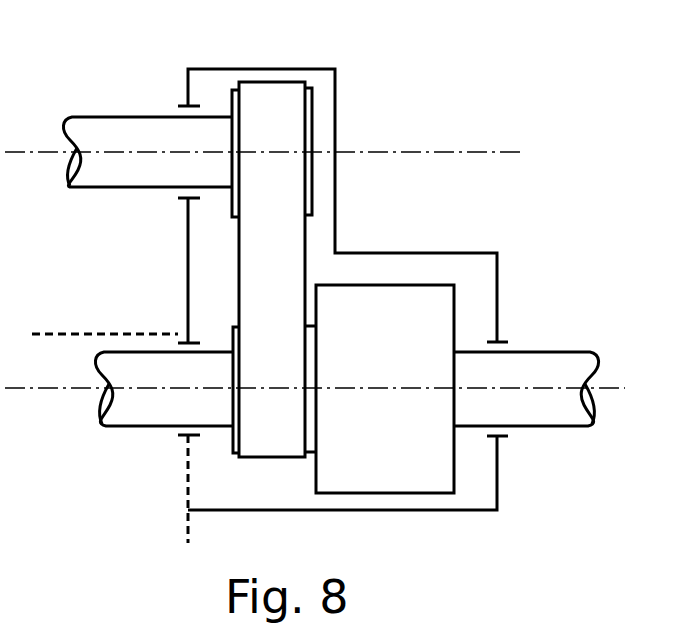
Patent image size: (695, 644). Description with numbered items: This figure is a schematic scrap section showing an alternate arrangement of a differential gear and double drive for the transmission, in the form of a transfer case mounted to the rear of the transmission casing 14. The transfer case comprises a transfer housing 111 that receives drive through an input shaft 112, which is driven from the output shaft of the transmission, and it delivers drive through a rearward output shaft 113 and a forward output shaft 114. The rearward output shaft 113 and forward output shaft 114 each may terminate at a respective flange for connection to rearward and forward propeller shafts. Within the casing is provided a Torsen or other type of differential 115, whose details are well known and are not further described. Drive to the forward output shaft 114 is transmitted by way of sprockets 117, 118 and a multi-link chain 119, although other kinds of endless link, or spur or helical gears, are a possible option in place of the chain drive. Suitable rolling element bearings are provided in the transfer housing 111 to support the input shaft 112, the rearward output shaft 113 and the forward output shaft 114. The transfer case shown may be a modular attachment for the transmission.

The transfer housing 111 is at (336, 114).
The input shaft 112 is at (170, 413).
The rearward output shaft 113 is at (538, 413).
The forward output shaft 114 is at (113, 130).
The differential 115 is at (403, 478).
The sprocket 117 is at (235, 330).
The sprocket 118 is at (312, 185).
The multi-link chain 119 is at (262, 250).
The transmission casing 14 is at (70, 333).